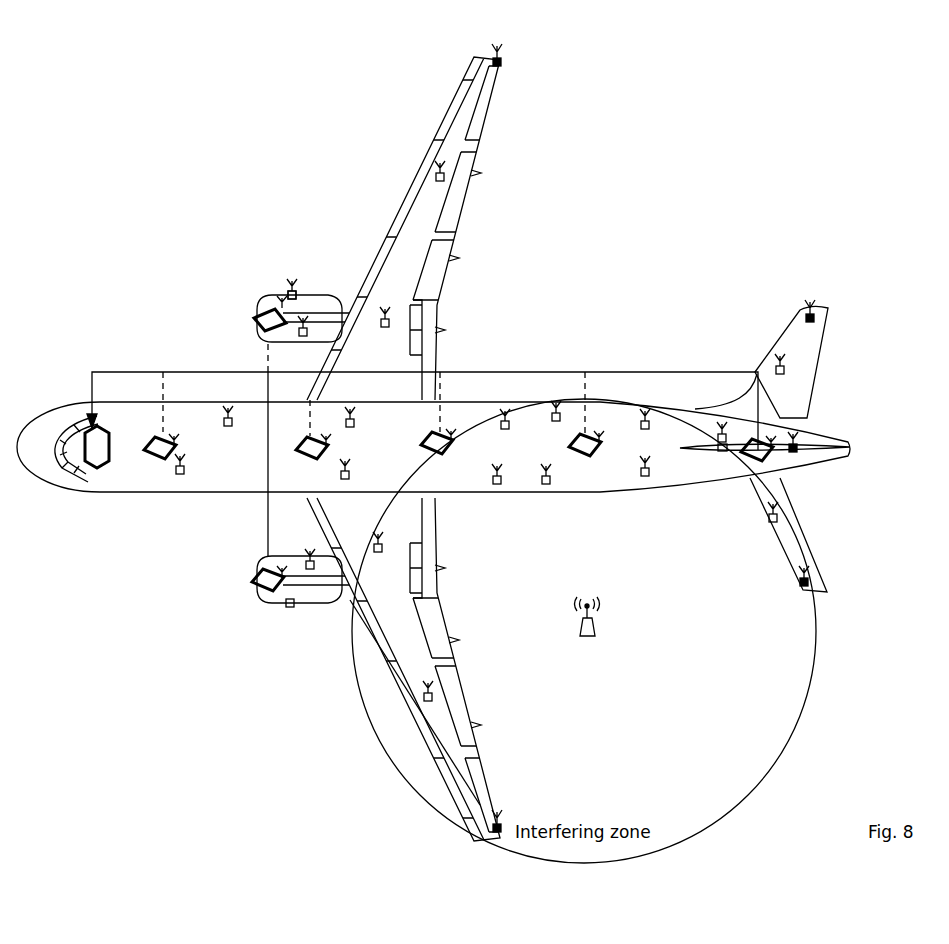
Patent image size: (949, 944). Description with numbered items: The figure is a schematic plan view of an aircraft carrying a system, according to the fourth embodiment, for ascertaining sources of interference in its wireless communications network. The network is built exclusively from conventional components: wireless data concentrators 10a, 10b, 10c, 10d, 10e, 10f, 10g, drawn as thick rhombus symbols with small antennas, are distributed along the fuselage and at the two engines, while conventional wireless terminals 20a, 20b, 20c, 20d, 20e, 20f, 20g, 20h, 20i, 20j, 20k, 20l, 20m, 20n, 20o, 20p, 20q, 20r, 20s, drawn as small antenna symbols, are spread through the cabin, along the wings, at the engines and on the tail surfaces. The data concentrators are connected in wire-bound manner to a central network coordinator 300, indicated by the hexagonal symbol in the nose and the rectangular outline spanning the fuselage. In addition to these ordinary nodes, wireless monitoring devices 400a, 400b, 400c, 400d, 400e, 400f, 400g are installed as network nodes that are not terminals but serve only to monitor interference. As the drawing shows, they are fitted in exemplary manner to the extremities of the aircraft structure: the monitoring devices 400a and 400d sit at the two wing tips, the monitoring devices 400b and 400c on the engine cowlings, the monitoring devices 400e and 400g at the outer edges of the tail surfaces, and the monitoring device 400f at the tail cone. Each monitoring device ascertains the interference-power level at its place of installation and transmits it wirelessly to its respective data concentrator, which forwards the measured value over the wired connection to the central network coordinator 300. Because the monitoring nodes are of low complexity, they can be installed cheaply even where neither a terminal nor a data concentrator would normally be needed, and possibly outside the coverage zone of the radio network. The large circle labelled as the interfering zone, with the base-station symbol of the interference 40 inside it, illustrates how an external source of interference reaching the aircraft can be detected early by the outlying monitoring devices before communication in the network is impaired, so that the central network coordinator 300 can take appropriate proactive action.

The central network coordinator 300 is at (90, 418).
The wireless data concentrator 10a is at (172, 462).
The wireless data concentrator 10b is at (325, 462).
The wireless data concentrator 10c is at (442, 455).
The wireless data concentrator 10d is at (592, 460).
The wireless data concentrator 10e is at (748, 465).
The wireless data concentrator 10f is at (262, 312).
The wireless data concentrator 10g is at (272, 592).
The wireless terminal 20a is at (190, 478).
The wireless terminal 20b is at (228, 405).
The wireless terminal 20c is at (350, 410).
The wireless terminal 20d is at (347, 460).
The wireless terminal 20e is at (499, 488).
The wireless terminal 20f is at (505, 409).
The wireless terminal 20g is at (548, 488).
The wireless terminal 20h is at (556, 400).
The wireless terminal 20i is at (650, 484).
The wireless terminal 20j is at (644, 409).
The wireless terminal 20k is at (708, 432).
The wireless terminal 20l is at (436, 180).
The wireless terminal 20m is at (381, 320).
The wireless terminal 20n is at (303, 284).
The wireless terminal 20o is at (379, 556).
The wireless terminal 20p is at (285, 572).
The wireless terminal 20q is at (424, 697).
The wireless terminal 20r is at (778, 356).
The wireless terminal 20s is at (775, 528).
The wireless monitoring device 400a is at (490, 64).
The wireless monitoring device 400b is at (288, 294).
The wireless monitoring device 400c is at (296, 606).
The wireless monitoring device 400d is at (458, 821).
The wireless monitoring device 400e is at (806, 306).
The wireless monitoring device 400f is at (812, 444).
The wireless monitoring device 400g is at (804, 594).
The interference 40 is at (595, 650).